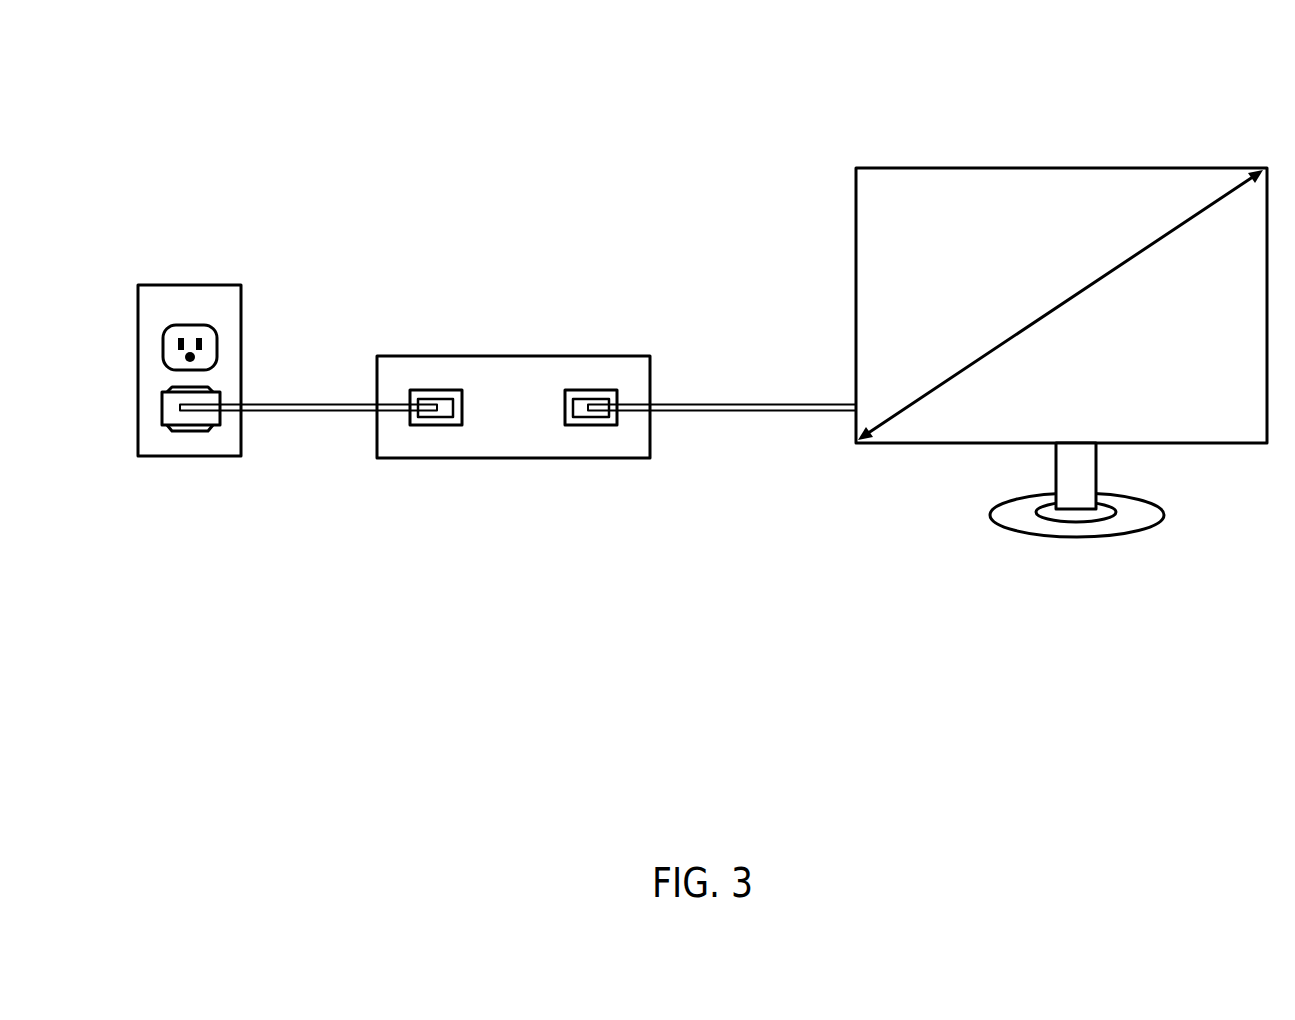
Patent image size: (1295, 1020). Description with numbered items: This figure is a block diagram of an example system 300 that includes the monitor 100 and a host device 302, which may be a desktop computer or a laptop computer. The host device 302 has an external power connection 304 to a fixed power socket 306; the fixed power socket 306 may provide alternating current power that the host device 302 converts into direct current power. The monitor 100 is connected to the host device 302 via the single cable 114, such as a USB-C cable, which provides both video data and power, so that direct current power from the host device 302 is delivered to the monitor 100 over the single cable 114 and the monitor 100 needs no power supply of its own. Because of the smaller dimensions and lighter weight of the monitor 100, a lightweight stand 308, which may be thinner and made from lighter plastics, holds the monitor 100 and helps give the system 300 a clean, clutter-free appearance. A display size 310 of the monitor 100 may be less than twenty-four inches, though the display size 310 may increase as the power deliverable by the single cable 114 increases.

The system 300 is at (100, 58).
The fixed power socket 306 is at (207, 314).
The external power connection 304 is at (313, 412).
The host device 302 is at (531, 389).
The single cable 114 is at (720, 412).
The monitor 100 is at (1182, 165).
The display size 310 is at (1067, 302).
The lightweight stand 308 is at (1097, 478).